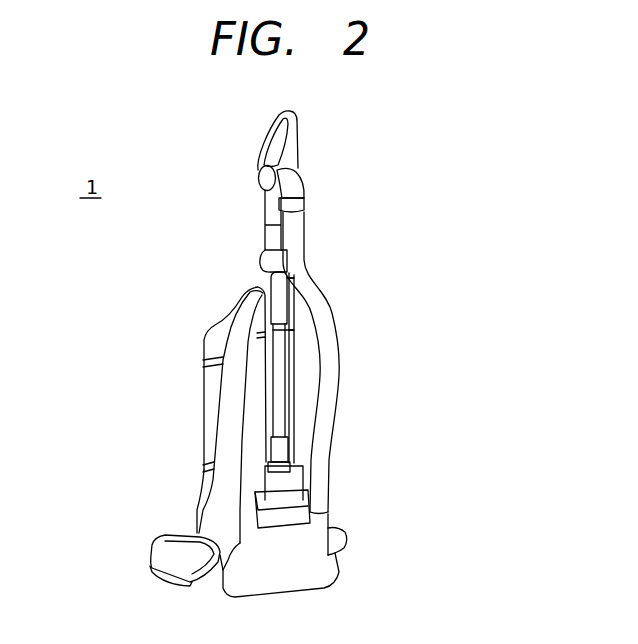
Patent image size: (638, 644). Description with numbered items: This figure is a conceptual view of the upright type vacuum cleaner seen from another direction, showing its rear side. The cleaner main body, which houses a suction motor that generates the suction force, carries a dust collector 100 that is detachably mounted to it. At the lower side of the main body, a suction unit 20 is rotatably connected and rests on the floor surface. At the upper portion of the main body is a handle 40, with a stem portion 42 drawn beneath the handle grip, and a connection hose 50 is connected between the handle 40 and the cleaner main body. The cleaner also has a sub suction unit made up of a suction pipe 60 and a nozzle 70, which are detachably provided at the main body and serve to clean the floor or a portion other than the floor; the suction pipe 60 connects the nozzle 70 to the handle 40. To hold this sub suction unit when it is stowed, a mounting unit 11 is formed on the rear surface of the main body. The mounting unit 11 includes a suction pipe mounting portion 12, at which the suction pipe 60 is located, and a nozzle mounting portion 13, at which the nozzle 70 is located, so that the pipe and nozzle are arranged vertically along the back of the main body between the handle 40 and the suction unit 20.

The dust collector 100 is at (201, 339).
The handle 40 is at (261, 142).
The handle stem 42 is at (276, 234).
The connection hose 50 is at (297, 233).
The suction pipe 60 is at (282, 360).
The mounting unit 11 is at (421, 388).
The suction pipe mounting portion 12 is at (291, 403).
The nozzle mounting portion 13 is at (303, 463).
The nozzle 70 is at (288, 485).
The suction unit 20 is at (167, 553).